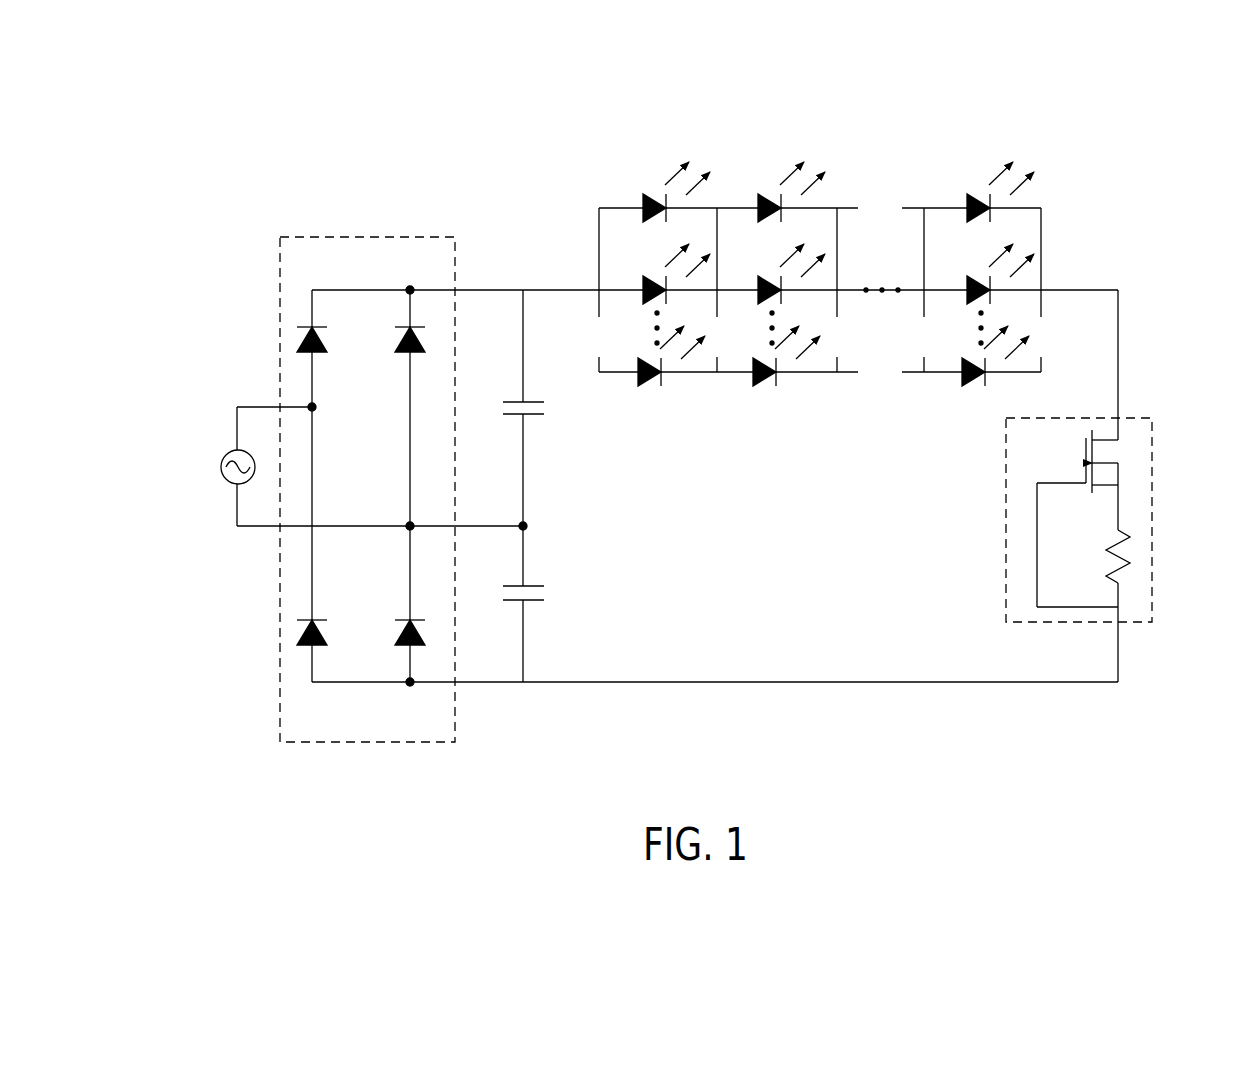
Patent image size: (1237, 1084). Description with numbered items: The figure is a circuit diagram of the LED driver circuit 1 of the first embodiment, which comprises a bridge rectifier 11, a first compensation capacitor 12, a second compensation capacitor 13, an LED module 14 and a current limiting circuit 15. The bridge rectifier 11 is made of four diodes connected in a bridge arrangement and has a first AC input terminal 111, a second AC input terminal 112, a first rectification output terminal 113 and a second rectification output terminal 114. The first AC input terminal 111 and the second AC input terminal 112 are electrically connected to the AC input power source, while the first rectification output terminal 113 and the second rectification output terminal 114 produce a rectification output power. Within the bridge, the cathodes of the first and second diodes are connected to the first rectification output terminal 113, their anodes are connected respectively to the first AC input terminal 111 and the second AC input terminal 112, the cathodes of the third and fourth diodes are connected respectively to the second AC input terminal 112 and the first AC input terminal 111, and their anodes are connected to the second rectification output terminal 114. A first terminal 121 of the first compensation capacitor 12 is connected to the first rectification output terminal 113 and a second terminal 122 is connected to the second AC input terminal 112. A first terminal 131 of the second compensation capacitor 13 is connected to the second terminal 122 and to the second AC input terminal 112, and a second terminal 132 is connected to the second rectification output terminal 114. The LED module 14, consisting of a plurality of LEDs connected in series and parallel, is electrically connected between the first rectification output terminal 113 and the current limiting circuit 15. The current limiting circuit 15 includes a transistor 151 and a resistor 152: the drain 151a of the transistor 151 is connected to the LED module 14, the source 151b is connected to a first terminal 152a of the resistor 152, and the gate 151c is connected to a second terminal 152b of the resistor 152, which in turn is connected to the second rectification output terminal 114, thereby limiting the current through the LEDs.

The LED driver circuit 1 is at (1160, 288).
The bridge rectifier 11 is at (376, 236).
The first AC input terminal 111 is at (310, 406).
The second AC input terminal 112 is at (409, 525).
The first rectification output terminal 113 is at (412, 289).
The second rectification output terminal 114 is at (413, 684).
The first compensation capacitor 12 is at (540, 410).
The first terminal of the first compensation capacitor 121 is at (524, 401).
The second terminal of the first compensation capacitor 122 is at (524, 415).
The second compensation capacitor 13 is at (540, 597).
The first terminal of the second compensation capacitor 131 is at (524, 585).
The second terminal of the second compensation capacitor 132 is at (524, 601).
The LED module 14 is at (1046, 218).
The current limiting circuit 15 is at (1152, 436).
The transistor 151 is at (1122, 465).
The drain 151a is at (1116, 439).
The source 151b is at (1116, 487).
The gate 151c is at (1084, 483).
The resistor 152 is at (1131, 555).
The first terminal of the resistor 152a is at (1120, 530).
The second terminal of the resistor 152b is at (1120, 585).